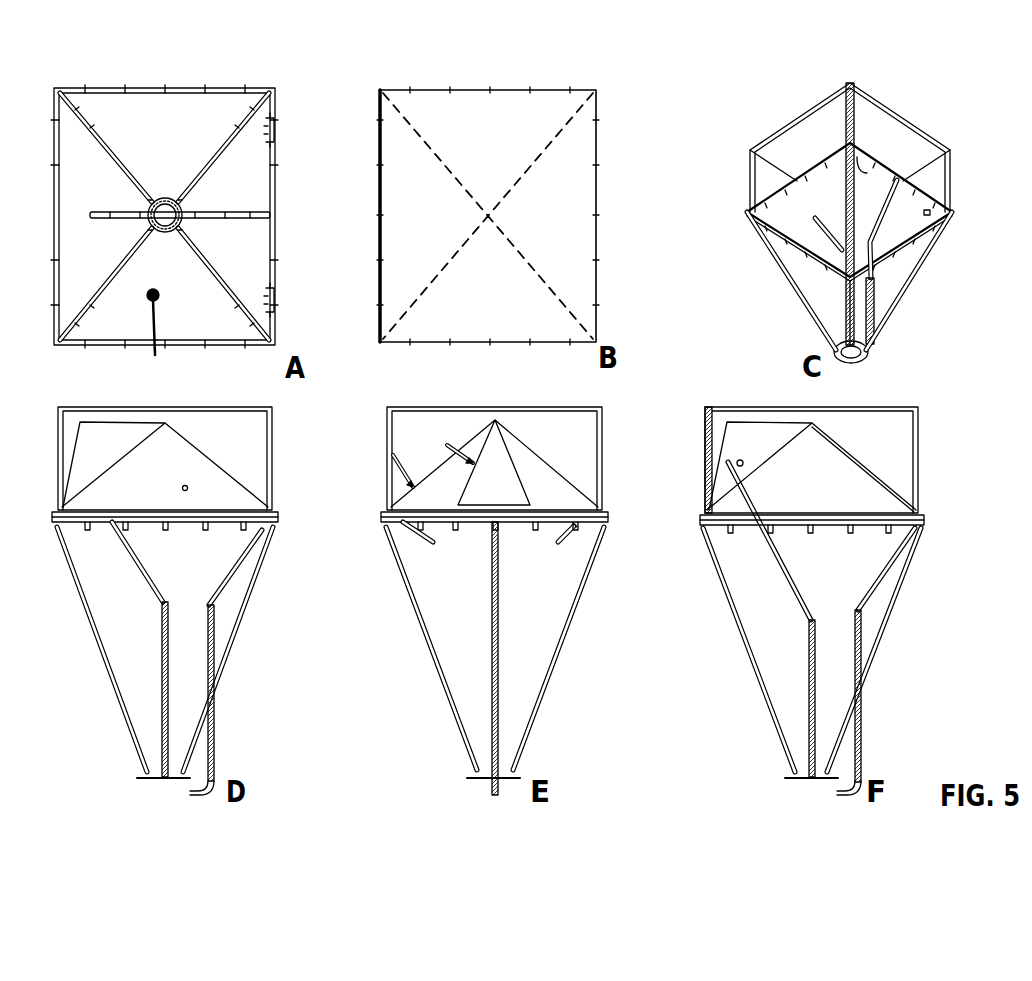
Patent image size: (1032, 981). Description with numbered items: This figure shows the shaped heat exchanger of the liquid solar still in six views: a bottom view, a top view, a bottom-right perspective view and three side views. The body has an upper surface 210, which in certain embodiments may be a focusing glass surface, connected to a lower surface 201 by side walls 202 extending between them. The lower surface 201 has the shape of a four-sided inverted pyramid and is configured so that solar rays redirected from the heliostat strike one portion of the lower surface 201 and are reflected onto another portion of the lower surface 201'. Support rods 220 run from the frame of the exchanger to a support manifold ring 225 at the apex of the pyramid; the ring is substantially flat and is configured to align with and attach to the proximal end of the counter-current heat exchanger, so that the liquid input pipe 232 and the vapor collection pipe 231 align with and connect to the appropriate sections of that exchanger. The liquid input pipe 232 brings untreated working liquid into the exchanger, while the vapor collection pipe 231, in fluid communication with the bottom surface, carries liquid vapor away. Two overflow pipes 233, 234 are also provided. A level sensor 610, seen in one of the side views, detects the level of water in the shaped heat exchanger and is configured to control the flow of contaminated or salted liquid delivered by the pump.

The lower surface 201 is at (526, 198).
The another portion of the lower surface 201' is at (160, 340).
The side walls 202 is at (564, 145).
The upper surface 210 is at (902, 133).
The support rods 220 is at (75, 95).
The support manifold ring 225 is at (187, 223).
The vapor collection pipe 231 is at (242, 216).
The liquid input pipe 232 is at (92, 220).
The overflow pipe 233 is at (275, 133).
The overflow pipe 234 is at (272, 300).
The level sensor 610 is at (414, 484).